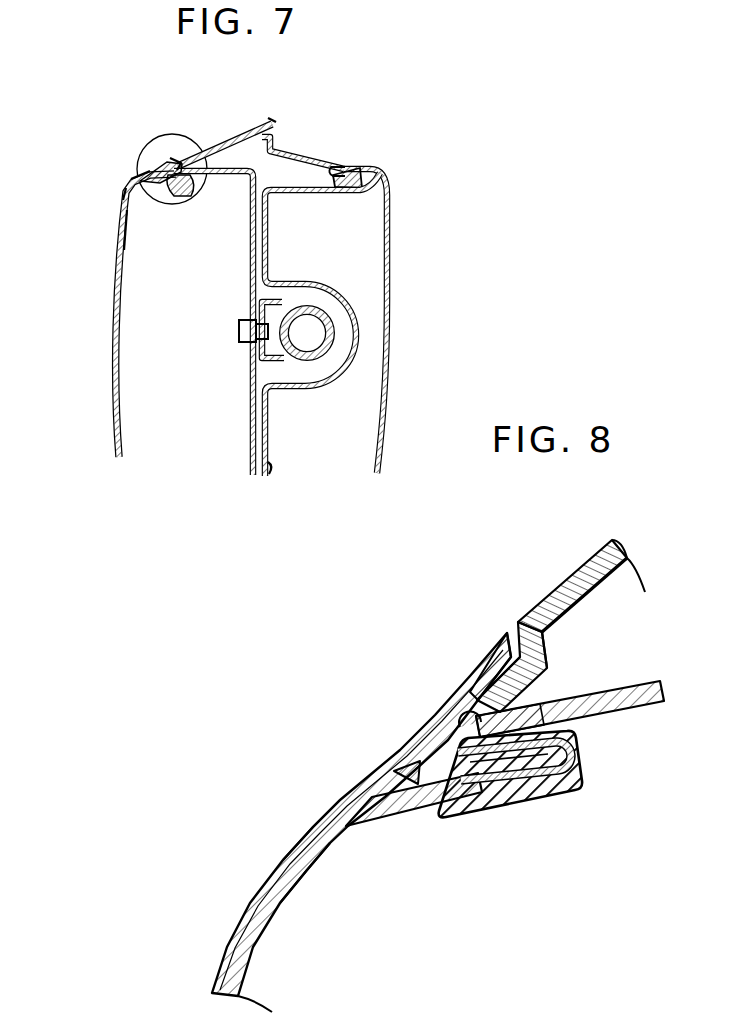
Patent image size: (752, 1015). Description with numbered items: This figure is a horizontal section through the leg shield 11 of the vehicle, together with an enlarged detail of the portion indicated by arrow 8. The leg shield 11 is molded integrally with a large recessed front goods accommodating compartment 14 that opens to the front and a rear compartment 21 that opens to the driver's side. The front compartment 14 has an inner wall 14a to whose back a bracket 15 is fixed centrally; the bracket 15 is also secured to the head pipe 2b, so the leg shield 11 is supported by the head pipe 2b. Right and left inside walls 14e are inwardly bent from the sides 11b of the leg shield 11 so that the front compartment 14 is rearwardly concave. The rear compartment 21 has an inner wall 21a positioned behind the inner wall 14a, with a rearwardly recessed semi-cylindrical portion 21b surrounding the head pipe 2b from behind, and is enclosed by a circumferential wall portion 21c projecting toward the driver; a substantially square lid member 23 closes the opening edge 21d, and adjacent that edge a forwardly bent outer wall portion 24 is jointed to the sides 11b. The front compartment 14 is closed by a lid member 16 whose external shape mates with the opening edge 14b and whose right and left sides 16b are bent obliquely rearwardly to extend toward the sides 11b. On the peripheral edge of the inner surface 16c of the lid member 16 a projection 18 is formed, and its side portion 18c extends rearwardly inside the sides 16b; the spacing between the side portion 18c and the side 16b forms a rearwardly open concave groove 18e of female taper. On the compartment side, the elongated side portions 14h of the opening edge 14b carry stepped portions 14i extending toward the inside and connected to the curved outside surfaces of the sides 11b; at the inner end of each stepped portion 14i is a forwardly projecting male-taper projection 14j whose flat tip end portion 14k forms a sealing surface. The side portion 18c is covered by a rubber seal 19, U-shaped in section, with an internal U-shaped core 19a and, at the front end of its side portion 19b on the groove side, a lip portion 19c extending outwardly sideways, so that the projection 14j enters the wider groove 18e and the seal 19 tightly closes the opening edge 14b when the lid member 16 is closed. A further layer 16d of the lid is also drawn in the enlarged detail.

In FIG. 7, the head pipe 2b is at (336, 338).
In FIG. 7, the arrow 8 is at (138, 138).
In FIG. 7, the leg shield 11 is at (272, 112).
In FIG. 7, the sides of the leg shield 11b is at (217, 148).
In FIG. 8, the sides of the leg shield 11b is at (604, 546).
In FIG. 7, the front goods accommodating compartment 14 is at (195, 275).
In FIG. 7, the inner wall 14a is at (250, 270).
In FIG. 7, the opening edge 14b is at (170, 160).
In FIG. 8, the opening edge 14b is at (532, 605).
In FIG. 7, the right and left inside walls 14e is at (218, 180).
In FIG. 8, the right and left inside walls 14e is at (647, 707).
In FIG. 8, the side portions of the opening edge 14h is at (543, 655).
In FIG. 8, the stepped portions 14i is at (502, 630).
In FIG. 8, the projection 14j is at (497, 727).
In FIG. 8, the tip end portion 14k is at (450, 717).
In FIG. 7, the bracket 15 is at (272, 362).
In FIG. 7, the lid member 16 is at (112, 378).
In FIG. 8, the lid member 16 is at (335, 822).
In FIG. 7, the right and left sides of the lid member 16b is at (130, 183).
In FIG. 8, the right and left sides of the lid member 16b is at (310, 826).
In FIG. 7, the inner surface of the lid member 16c is at (130, 195).
In FIG. 8, the inner surface of the lid member 16c is at (298, 880).
In FIG. 8, the side panel inner layer 16d is at (420, 732).
In FIG. 7, the projection 18 is at (155, 168).
In FIG. 7, the side portion of the projection 18c is at (165, 183).
In FIG. 8, the side portion of the projection 18c is at (413, 803).
In FIG. 8, the concave groove 18e is at (410, 782).
In FIG. 7, the rubber seal 19 is at (180, 195).
In FIG. 8, the rubber seal 19 is at (534, 739).
In FIG. 8, the core 19a is at (485, 806).
In FIG. 8, the side portion of the rubber seal 19b is at (580, 747).
In FIG. 8, the lip portion 19c is at (458, 717).
In FIG. 7, the rear compartment 21 is at (281, 242).
In FIG. 7, the inner wall of the rear compartment 21a is at (271, 464).
In FIG. 7, the semi-cylindrical portion 21b is at (338, 379).
In FIG. 7, the circumferential wall portion 21c is at (331, 185).
In FIG. 7, the opening edge of the rear compartment 21d is at (340, 176).
In FIG. 7, the lid member 23 is at (392, 305).
In FIG. 7, the outer wall portion 24 is at (310, 157).